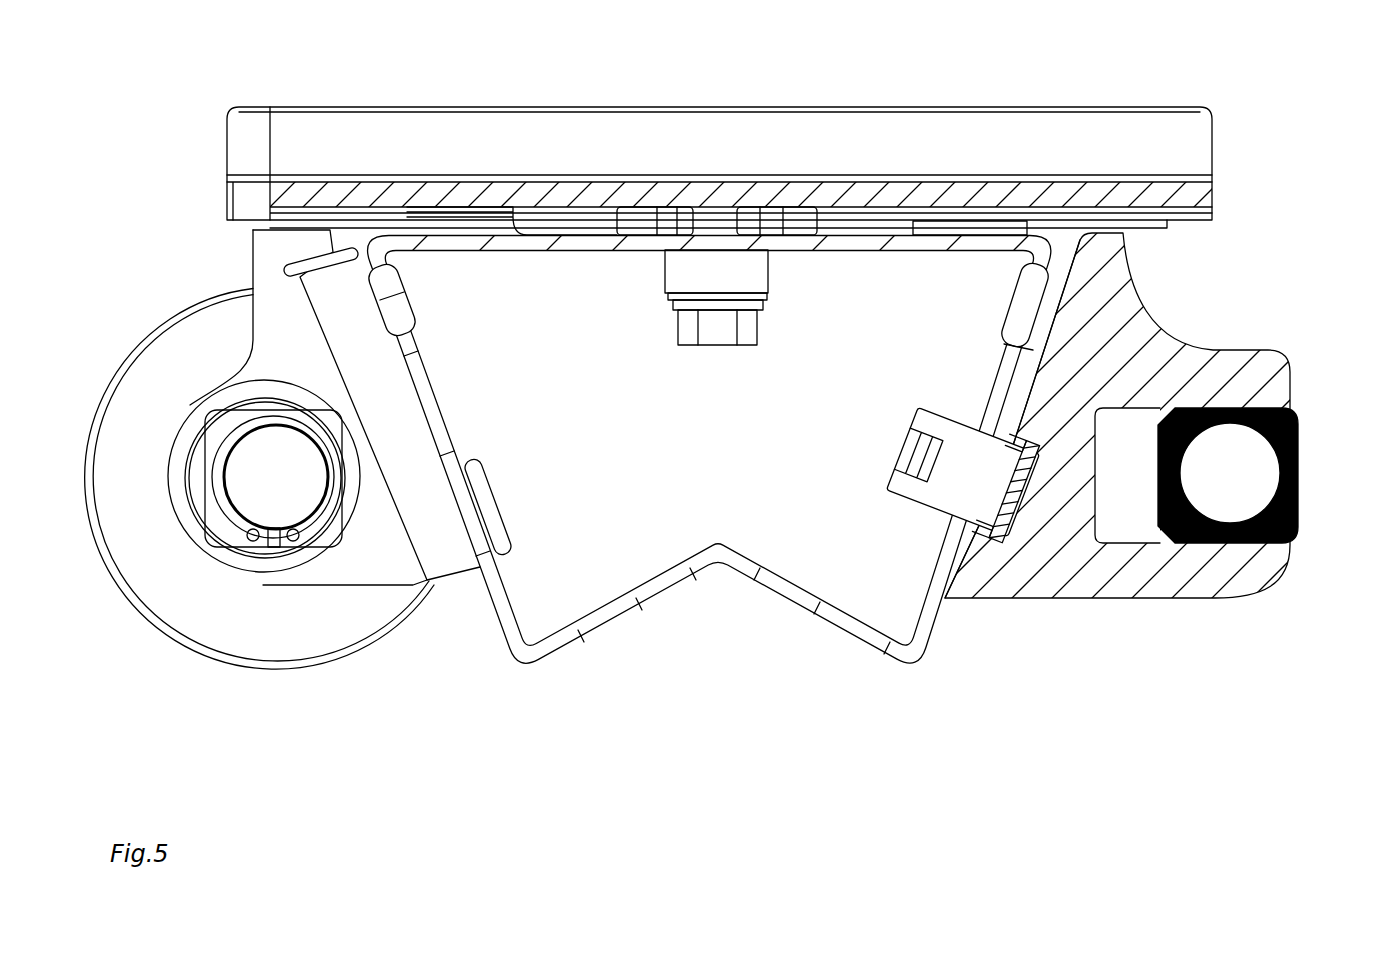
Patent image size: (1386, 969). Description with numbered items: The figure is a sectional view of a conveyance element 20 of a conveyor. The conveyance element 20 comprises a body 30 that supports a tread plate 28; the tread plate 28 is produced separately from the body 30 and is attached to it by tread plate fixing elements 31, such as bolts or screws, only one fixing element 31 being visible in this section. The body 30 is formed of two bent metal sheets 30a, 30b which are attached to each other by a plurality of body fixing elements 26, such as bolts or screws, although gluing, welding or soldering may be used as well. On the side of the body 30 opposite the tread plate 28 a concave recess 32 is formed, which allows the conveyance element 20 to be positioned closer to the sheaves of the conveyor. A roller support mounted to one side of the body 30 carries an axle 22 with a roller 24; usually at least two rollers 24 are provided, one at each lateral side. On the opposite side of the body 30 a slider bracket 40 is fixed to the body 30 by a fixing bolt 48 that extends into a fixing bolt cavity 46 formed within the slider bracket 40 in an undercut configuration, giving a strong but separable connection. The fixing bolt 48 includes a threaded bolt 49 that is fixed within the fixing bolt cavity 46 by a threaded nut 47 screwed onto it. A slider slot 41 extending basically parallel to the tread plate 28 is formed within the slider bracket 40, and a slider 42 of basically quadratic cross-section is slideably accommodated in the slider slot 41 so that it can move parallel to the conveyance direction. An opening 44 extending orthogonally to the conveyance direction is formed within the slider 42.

The conveyance element 20 is at (1220, 76).
The axle 22 is at (290, 494).
The roller 24 is at (182, 340).
The body fixing elements 26 is at (430, 306).
The tread plate 28 is at (1232, 132).
The body 30 is at (709, 518).
The sheet 30a is at (596, 250).
The sheet 30b is at (506, 618).
The tread plate fixing element 31 is at (703, 358).
The concave recess 32 is at (688, 640).
The slider bracket 40 is at (978, 448).
The slider slot 41 is at (1106, 542).
The slider 42 is at (1268, 452).
The opening 44 is at (1250, 490).
The fixing bolt cavity 46 is at (1012, 572).
The threaded nut 47 is at (1005, 488).
The fixing bolt 48 is at (969, 476).
The threaded bolt 49 is at (918, 455).